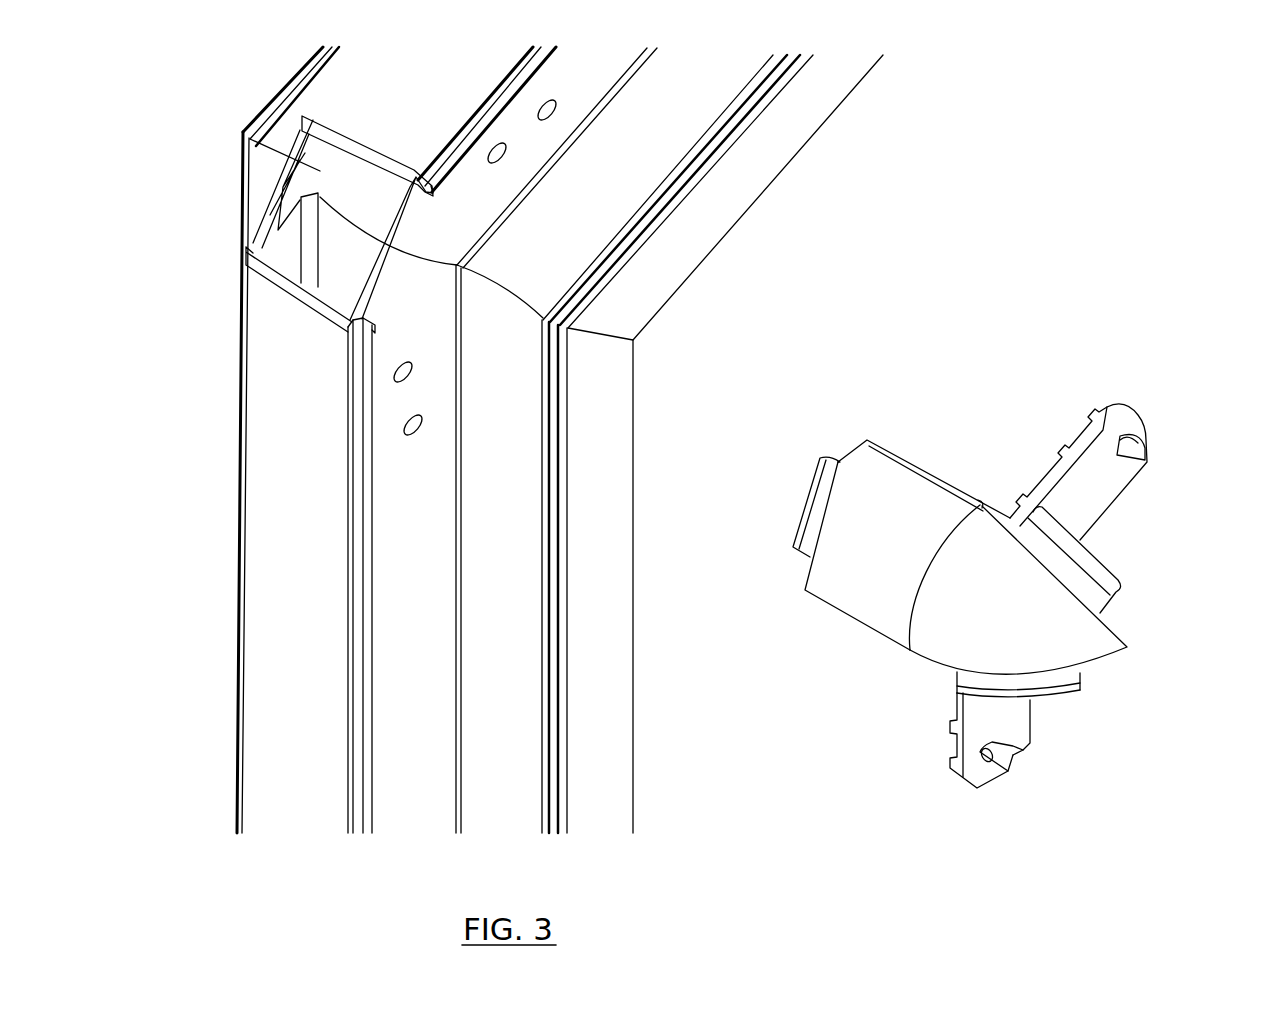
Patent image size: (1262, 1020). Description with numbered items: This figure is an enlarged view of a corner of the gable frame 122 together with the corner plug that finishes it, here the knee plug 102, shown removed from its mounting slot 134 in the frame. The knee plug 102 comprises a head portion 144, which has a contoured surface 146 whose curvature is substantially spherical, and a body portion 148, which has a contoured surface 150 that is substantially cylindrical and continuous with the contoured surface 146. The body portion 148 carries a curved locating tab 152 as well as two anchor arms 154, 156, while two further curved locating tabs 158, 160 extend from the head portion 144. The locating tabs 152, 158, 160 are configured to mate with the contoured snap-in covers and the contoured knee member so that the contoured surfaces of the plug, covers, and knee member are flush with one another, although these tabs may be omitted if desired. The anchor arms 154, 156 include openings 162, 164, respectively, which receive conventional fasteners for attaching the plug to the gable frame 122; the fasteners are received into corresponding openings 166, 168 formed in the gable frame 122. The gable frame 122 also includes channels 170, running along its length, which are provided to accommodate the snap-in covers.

The knee plug 102 is at (996, 372).
The gable frame 122 is at (213, 468).
The mounting slot 134 is at (415, 228).
The head portion 144 is at (928, 680).
The contoured surface 146 is at (1068, 633).
The body portion 148 is at (842, 627).
The contoured surface 150 is at (887, 480).
The curved locating tab 152 is at (800, 522).
The anchor arm 154 is at (1048, 475).
The anchor arm 156 is at (1018, 721).
The curved locating tab 158 is at (1090, 574).
The curved locating tab 160 is at (1070, 694).
The opening 162 is at (1118, 440).
The opening 164 is at (1013, 757).
The opening 166 is at (553, 104).
The opening 168 is at (425, 423).
The channel 170 is at (617, 153).